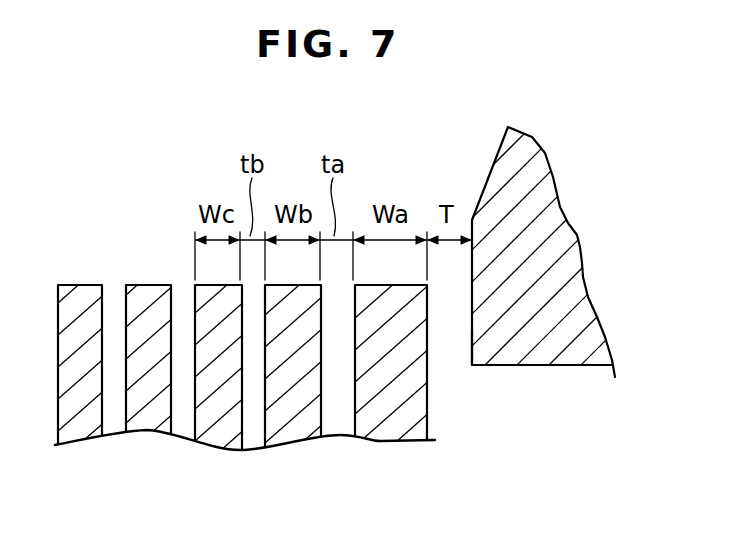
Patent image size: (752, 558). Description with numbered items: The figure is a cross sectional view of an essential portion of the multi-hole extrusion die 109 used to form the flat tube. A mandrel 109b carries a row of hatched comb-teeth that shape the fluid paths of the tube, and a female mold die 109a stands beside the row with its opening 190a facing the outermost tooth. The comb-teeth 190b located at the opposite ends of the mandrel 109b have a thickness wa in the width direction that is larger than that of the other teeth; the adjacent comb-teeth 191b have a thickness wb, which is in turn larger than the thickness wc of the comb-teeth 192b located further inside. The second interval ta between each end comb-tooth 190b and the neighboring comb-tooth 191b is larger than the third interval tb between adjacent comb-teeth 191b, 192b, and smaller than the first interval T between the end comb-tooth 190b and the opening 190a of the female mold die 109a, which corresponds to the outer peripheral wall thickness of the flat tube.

The multi-hole extrusion die 109 is at (415, 159).
The female mold die 109a is at (557, 252).
The mandrel 109b is at (137, 442).
The opening of the female mold die 190a is at (470, 340).
The comb-teeth at the opposite ends 190b is at (392, 433).
The comb-teeth adjacent the end comb-teeth 191b is at (290, 433).
The inner comb-teeth 192b is at (213, 425).